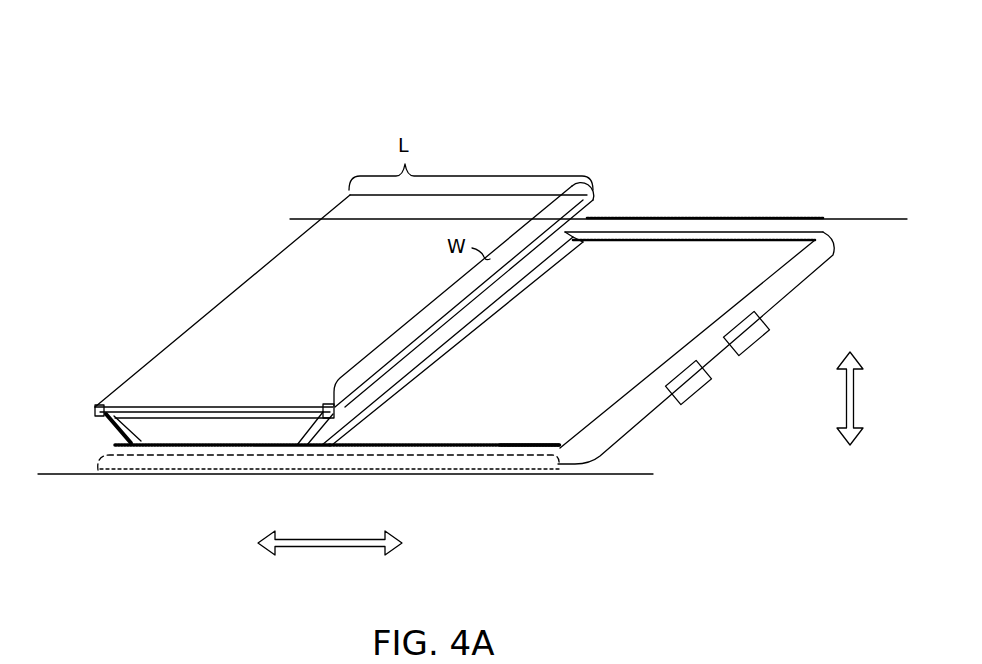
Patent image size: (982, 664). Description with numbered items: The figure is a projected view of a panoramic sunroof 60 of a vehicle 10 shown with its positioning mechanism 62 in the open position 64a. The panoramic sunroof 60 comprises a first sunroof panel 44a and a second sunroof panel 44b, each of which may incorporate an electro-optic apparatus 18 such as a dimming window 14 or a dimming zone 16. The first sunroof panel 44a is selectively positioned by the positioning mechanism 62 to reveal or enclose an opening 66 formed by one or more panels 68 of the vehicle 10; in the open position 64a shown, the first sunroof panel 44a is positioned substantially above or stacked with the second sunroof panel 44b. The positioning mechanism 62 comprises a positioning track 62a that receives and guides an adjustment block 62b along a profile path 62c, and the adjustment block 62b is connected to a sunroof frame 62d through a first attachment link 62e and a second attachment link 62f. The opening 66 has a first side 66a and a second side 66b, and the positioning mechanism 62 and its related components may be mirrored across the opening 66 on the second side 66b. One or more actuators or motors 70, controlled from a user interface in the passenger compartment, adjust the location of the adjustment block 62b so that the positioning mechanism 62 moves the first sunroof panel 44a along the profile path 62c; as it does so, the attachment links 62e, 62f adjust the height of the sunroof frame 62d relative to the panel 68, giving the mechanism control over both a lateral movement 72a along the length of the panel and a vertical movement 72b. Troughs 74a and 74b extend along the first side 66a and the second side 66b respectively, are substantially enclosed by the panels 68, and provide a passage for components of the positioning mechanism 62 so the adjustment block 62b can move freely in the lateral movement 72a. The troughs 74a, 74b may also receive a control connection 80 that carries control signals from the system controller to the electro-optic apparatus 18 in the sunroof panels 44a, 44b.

The vehicle 10 is at (472, 301).
The panoramic sunroof 60 is at (265, 40).
The dimming window 14 is at (315, 352).
The dimming zone 16 is at (315, 352).
The electro-optic apparatus 18 is at (313, 261).
The first sunroof panel 44a is at (162, 368).
The second sunroof panel 44b is at (173, 430).
The positioning mechanism 62 is at (579, 283).
The open position 64a is at (668, 150).
The positioning track 62a is at (460, 445).
The adjustment block 62b is at (252, 440).
The profile path 62c is at (452, 468).
The sunroof frame 62d is at (196, 407).
The first attachment link 62e is at (117, 405).
The second attachment link 62f is at (320, 407).
The opening 66 is at (615, 350).
The first side 66a is at (558, 412).
The second side 66b is at (668, 237).
The panel 68 is at (860, 227).
The motor 70 is at (700, 387).
The lateral movement 72a is at (303, 548).
The vertical movement 72b is at (843, 402).
The trough 74a is at (215, 463).
The trough 74b is at (729, 210).
The control connection 80 is at (105, 431).